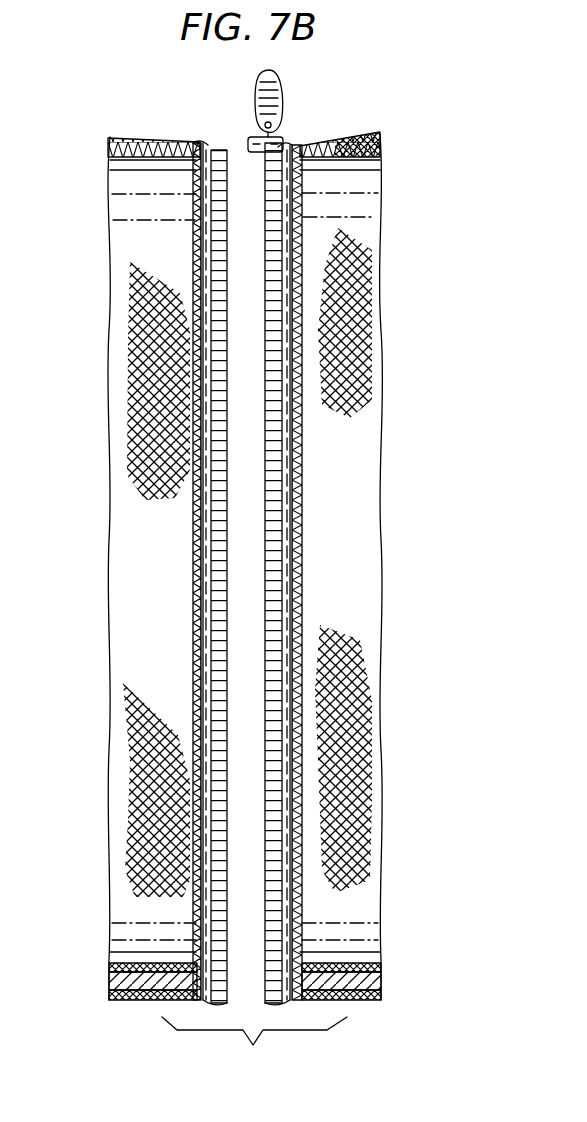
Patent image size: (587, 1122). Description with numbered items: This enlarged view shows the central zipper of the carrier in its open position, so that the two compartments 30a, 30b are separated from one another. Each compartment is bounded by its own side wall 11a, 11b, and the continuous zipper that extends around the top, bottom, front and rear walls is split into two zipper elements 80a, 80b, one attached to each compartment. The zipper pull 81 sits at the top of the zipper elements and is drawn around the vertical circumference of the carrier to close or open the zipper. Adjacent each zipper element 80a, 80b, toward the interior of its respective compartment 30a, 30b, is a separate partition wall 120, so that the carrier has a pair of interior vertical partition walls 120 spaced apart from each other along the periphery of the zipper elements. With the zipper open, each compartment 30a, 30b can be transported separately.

The side wall 11a is at (123, 610).
The side wall 11b is at (352, 795).
The compartment 30a is at (122, 787).
The compartment 30b is at (357, 645).
The zipper element 80a is at (220, 540).
The zipper element 80b is at (283, 505).
The zipper pull 81 is at (283, 92).
The partition wall 120 is at (193, 250).